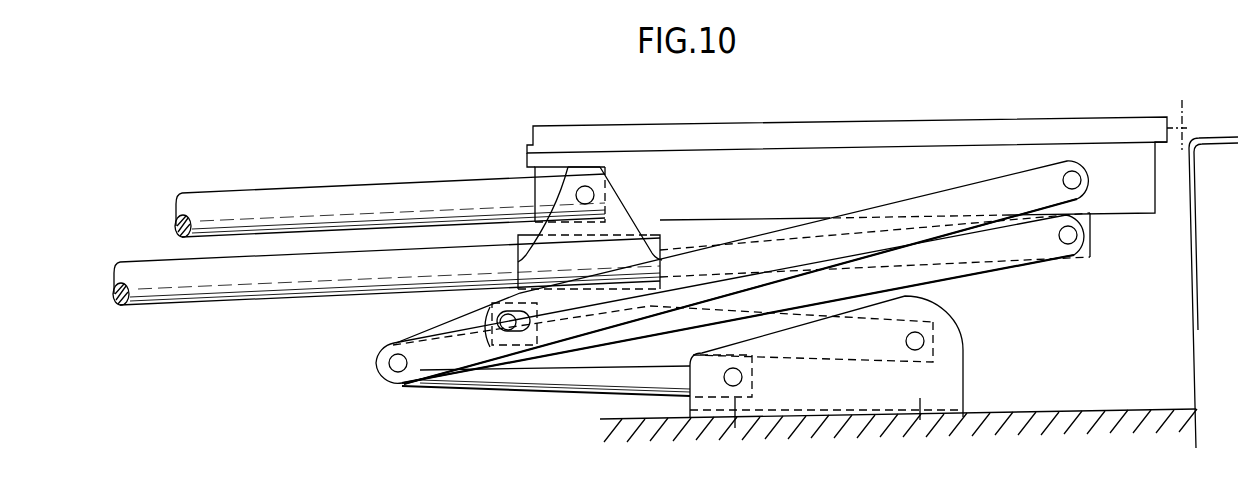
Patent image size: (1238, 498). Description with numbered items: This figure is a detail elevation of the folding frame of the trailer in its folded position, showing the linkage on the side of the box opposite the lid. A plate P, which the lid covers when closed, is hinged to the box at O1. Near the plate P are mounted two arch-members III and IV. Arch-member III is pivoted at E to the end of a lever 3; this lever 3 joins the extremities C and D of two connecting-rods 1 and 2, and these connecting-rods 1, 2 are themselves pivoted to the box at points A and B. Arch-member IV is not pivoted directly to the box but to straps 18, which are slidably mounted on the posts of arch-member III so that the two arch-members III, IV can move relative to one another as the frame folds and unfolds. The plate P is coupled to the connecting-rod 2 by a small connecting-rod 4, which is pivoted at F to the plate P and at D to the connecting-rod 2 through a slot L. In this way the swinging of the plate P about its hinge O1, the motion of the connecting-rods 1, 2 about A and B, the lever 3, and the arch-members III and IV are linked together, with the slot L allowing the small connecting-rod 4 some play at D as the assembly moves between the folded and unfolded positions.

The plate P is at (847, 168).
The hinge of plate O1 is at (1192, 123).
The arch-member IV is at (371, 205).
The arch-member III is at (384, 293).
The straps 18 is at (804, 228).
The small connecting-rod 4 is at (742, 272).
The lever 3 is at (730, 299).
The connecting-rod 2 is at (663, 332).
The connecting-rod 1 is at (546, 376).
The extremity of connecting-rod C is at (381, 363).
The extremity of connecting-rod D is at (490, 327).
The slot L is at (527, 324).
The pivot of arch-member E is at (1059, 237).
The pivot of small connecting-rod F is at (1088, 171).
The pivot point A is at (826, 362).
The pivot point B is at (824, 343).